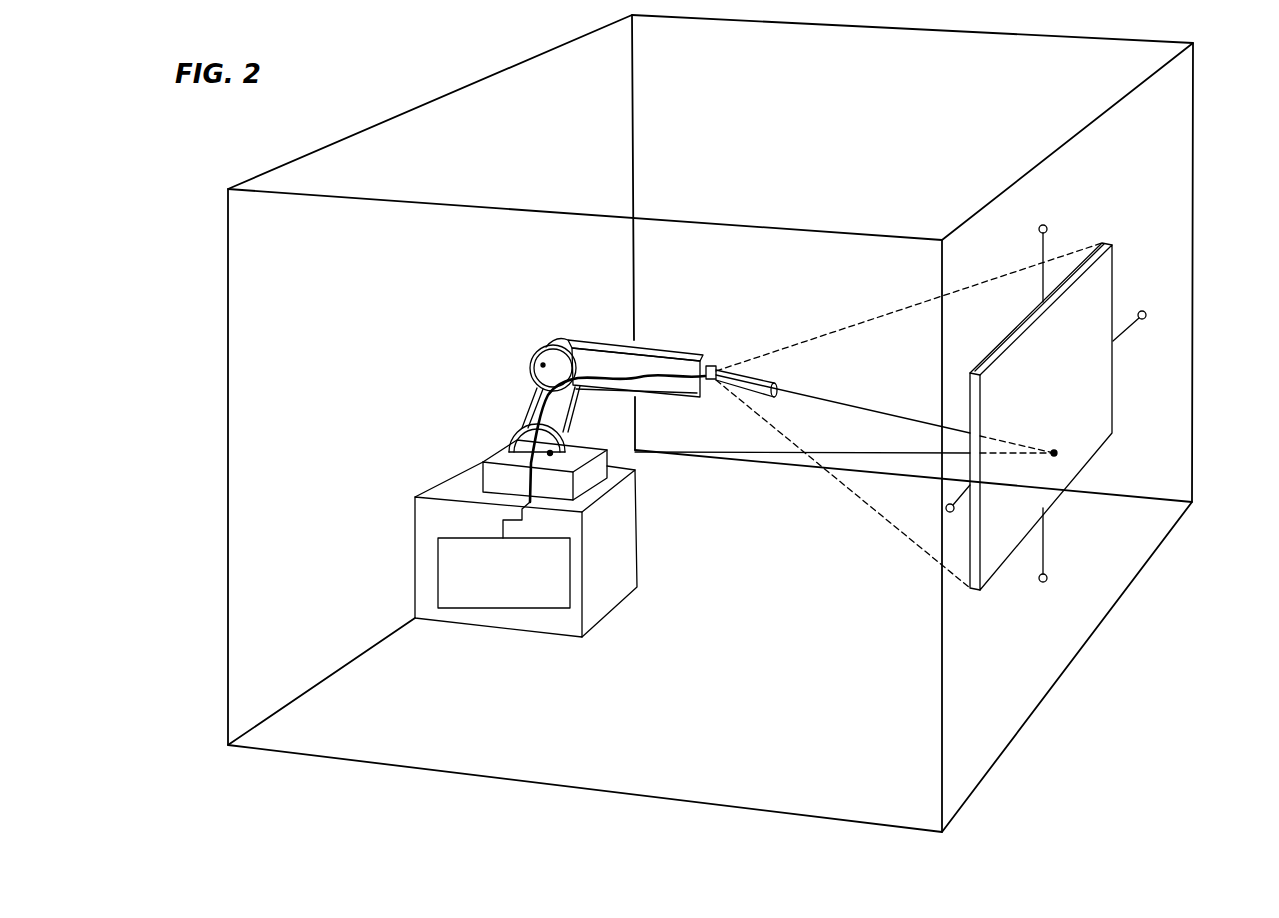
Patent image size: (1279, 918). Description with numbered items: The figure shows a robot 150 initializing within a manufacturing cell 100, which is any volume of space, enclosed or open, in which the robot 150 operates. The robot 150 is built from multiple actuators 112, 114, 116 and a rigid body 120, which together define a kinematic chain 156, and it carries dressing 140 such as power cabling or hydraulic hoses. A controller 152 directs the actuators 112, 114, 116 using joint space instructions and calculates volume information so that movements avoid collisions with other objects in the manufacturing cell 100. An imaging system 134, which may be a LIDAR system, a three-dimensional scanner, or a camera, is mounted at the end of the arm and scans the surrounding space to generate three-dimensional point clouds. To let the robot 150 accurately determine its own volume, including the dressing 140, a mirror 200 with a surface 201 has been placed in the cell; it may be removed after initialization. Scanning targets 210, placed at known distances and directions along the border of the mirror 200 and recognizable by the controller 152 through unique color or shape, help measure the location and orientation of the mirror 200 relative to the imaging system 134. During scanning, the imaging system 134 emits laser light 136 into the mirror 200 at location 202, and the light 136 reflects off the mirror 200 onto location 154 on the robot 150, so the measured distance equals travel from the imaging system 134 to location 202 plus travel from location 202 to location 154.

The manufacturing cell 100 is at (1193, 297).
The actuator 112 is at (493, 454).
The actuator 114 is at (518, 432).
The actuator 116 is at (541, 366).
The rigid body 120 is at (537, 410).
The imaging system 134 is at (712, 366).
The laser light 136 is at (902, 413).
The dressing 140 is at (673, 389).
The robot 150 is at (603, 394).
The controller 152 is at (526, 549).
The location on robot 154 is at (552, 452).
The kinematic chain 156 is at (480, 311).
The mirror 200 is at (1097, 393).
The surface 201 is at (1004, 326).
The location 202 is at (1057, 453).
The scanning targets 210 is at (1047, 229).